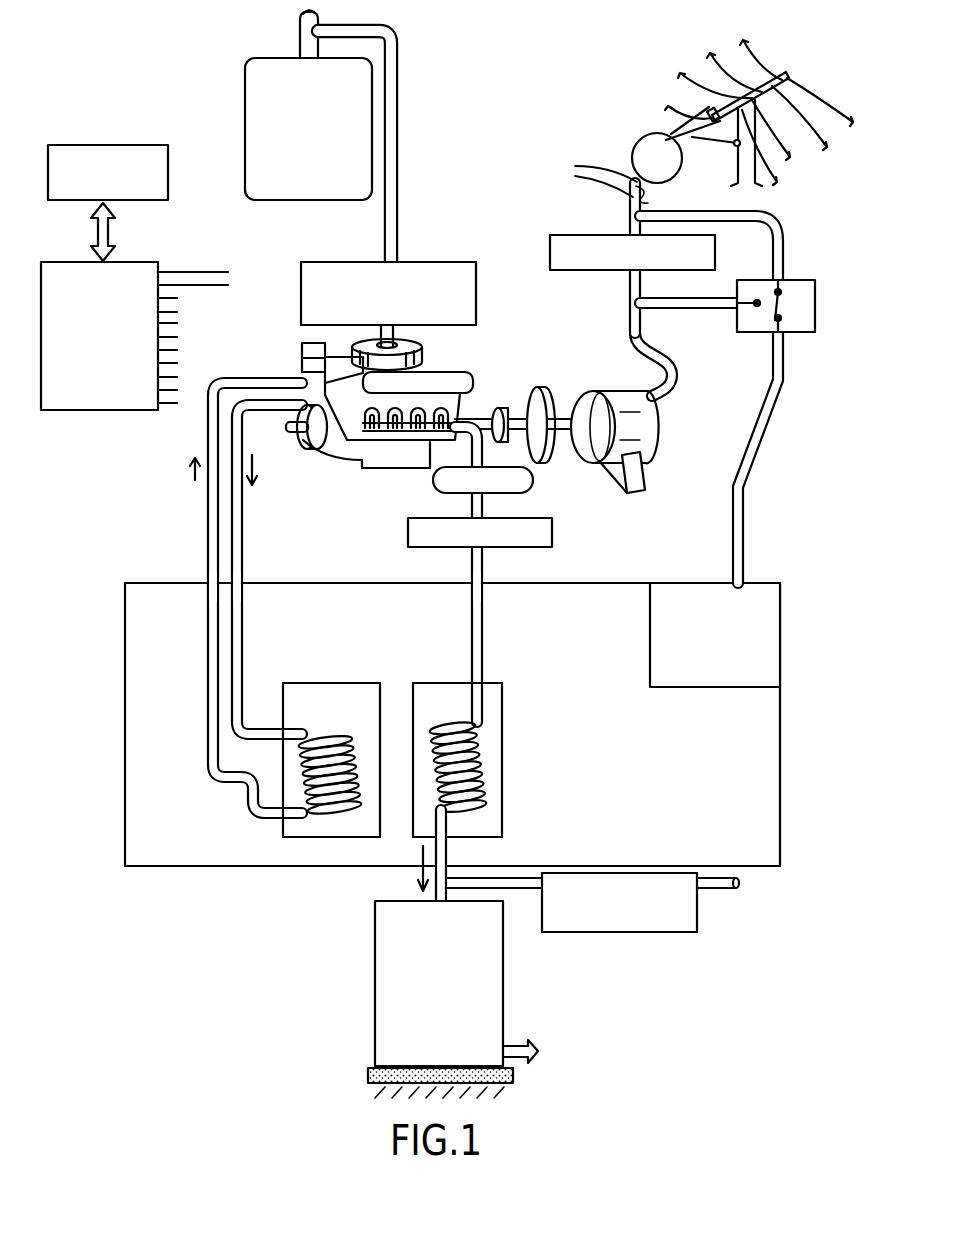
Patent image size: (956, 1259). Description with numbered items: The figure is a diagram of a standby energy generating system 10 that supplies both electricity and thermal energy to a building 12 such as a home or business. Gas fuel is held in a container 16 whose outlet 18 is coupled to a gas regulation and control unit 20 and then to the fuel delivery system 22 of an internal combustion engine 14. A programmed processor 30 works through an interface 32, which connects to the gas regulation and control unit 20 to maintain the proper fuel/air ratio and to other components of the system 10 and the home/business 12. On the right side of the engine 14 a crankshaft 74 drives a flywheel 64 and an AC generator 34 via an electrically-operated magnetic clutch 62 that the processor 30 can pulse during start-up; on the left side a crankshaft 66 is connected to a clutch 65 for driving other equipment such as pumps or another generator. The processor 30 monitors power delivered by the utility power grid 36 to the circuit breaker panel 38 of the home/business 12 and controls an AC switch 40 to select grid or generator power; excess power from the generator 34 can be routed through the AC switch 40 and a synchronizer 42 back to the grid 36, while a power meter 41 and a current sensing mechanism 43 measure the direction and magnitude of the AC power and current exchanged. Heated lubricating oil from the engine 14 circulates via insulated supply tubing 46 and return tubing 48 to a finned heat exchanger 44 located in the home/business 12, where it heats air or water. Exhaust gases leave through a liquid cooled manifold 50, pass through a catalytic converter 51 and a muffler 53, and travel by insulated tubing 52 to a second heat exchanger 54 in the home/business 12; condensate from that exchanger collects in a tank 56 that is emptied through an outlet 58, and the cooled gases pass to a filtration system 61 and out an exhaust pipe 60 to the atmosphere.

The standby energy generating system 10 is at (465, 187).
The building (home/business) 12 is at (613, 583).
The internal combustion engine 14 is at (402, 415).
The container 16 is at (245, 118).
The outlet 18 is at (300, 38).
The gas regulation and control unit 20 is at (301, 296).
The fuel delivery system 22 is at (418, 350).
The programmed processor 30 is at (117, 145).
The interface 32 is at (72, 262).
The AC generator 34 is at (656, 432).
The utility power grid 36 is at (808, 70).
The circuit breaker panel 38 is at (783, 627).
The AC switch 40 is at (815, 311).
The power meter 41 is at (647, 137).
The synchronizer 42 is at (585, 235).
The current sensing mechanism 43 is at (586, 165).
The finned heat exchanger 44 is at (330, 683).
The insulated supply tubing 46 is at (243, 540).
The return tubing 48 is at (208, 547).
The liquid cooled manifold 50 is at (409, 437).
The catalytic converter 51 is at (534, 485).
The insulated tubing 52 is at (486, 565).
The muffler 53 is at (553, 535).
The second heat exchanger 54 is at (482, 766).
The tank 56 is at (504, 986).
The outlet 58 is at (519, 1042).
The exhaust pipe 60 is at (722, 889).
The filtration system 61 is at (635, 932).
The clutch 62 is at (501, 411).
The flywheel 64 is at (543, 386).
The clutch 65 is at (318, 450).
The crankshaft 66 is at (300, 444).
The crankshaft 74 is at (472, 420).